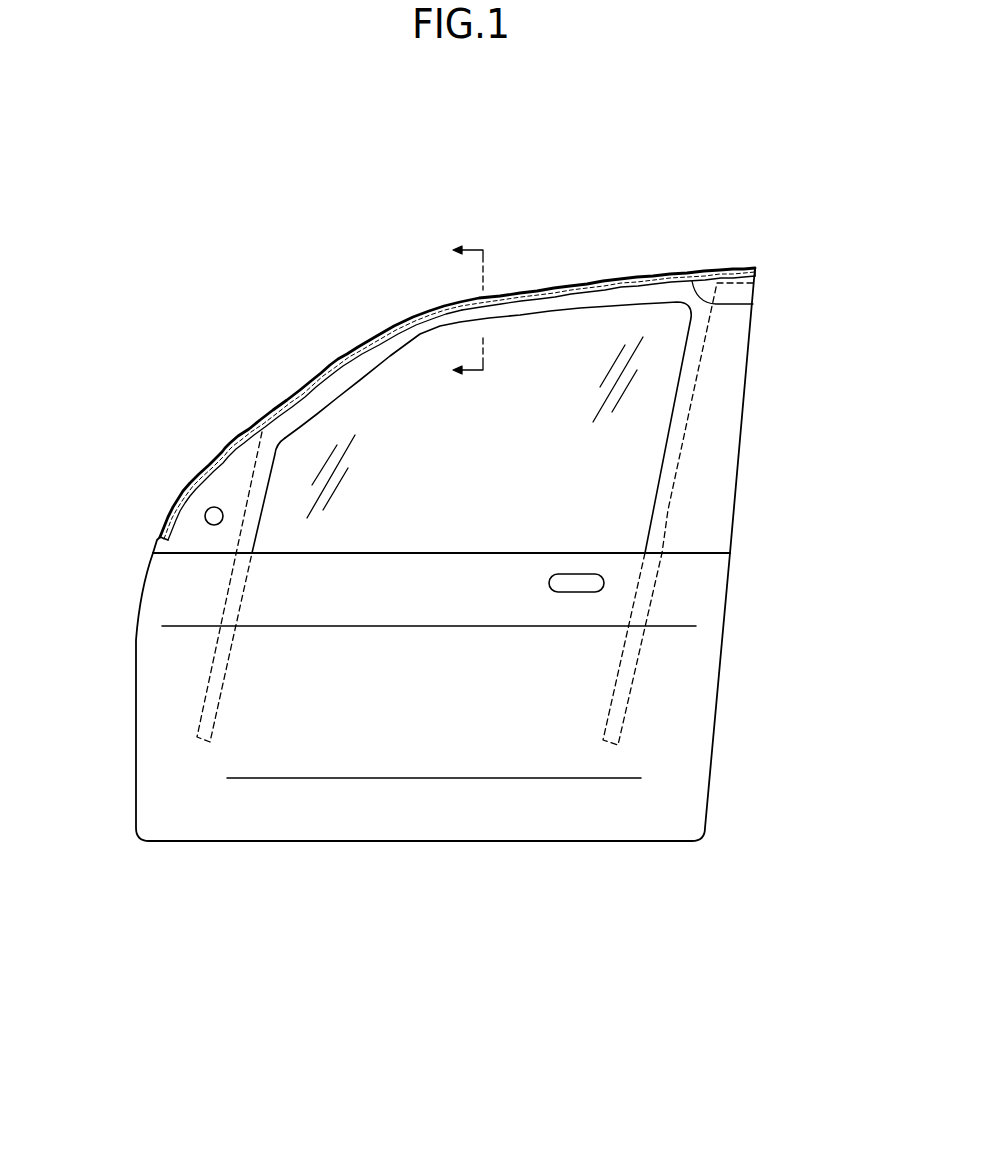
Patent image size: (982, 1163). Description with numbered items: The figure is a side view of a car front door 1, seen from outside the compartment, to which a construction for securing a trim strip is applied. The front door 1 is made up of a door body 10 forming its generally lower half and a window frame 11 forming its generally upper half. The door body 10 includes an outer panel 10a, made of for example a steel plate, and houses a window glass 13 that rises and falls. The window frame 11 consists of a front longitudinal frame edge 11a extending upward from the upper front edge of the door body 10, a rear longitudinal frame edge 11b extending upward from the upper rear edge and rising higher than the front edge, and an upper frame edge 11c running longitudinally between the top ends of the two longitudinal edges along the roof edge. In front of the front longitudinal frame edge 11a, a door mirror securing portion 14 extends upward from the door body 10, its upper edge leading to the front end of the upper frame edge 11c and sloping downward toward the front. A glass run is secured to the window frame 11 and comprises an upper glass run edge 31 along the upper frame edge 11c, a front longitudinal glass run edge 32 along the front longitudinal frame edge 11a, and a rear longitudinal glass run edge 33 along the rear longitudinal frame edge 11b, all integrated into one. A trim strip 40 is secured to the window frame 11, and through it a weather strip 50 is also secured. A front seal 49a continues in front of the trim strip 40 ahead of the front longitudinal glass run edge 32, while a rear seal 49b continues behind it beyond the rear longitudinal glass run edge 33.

The front door 1 is at (386, 233).
The door body 10 is at (718, 751).
The outer panel 10a is at (425, 820).
The window frame 11 is at (750, 376).
The front longitudinal frame edge 11a is at (262, 477).
The rear longitudinal frame edge 11b is at (723, 443).
The upper frame edge 11c is at (528, 303).
The window glass 13 is at (575, 345).
The door mirror securing portion 14 is at (215, 492).
The upper glass run edge 31 is at (335, 360).
The front longitudinal glass run edge 32 is at (210, 703).
The rear longitudinal glass run edge 33 is at (627, 683).
The trim strip 40 is at (773, 303).
The front seal 49a is at (163, 517).
The rear seal 49b is at (735, 268).
The weather strip 50 is at (659, 267).